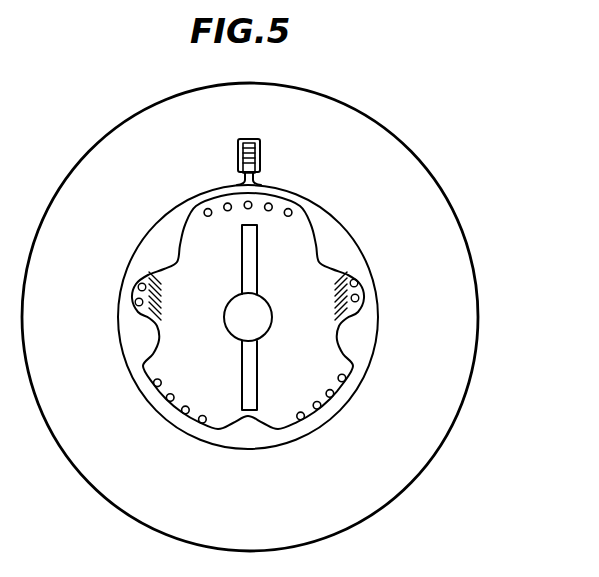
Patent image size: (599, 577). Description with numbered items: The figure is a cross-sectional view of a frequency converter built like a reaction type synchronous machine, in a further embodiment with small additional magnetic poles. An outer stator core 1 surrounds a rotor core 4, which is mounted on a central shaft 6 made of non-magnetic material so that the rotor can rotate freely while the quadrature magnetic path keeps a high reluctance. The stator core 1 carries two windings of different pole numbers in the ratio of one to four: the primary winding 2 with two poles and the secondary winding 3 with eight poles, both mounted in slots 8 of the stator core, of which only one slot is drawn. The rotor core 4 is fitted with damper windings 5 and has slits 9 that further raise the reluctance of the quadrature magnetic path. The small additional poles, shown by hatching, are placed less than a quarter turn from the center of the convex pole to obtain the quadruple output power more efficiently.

The stator core 1 is at (376, 150).
The primary winding 2 is at (260, 140).
The secondary winding 3 is at (260, 163).
The rotor core 4 is at (302, 258).
The damper windings 5 is at (293, 208).
The shaft 6 is at (272, 318).
The slots 8 is at (238, 140).
The slits 9 is at (253, 375).